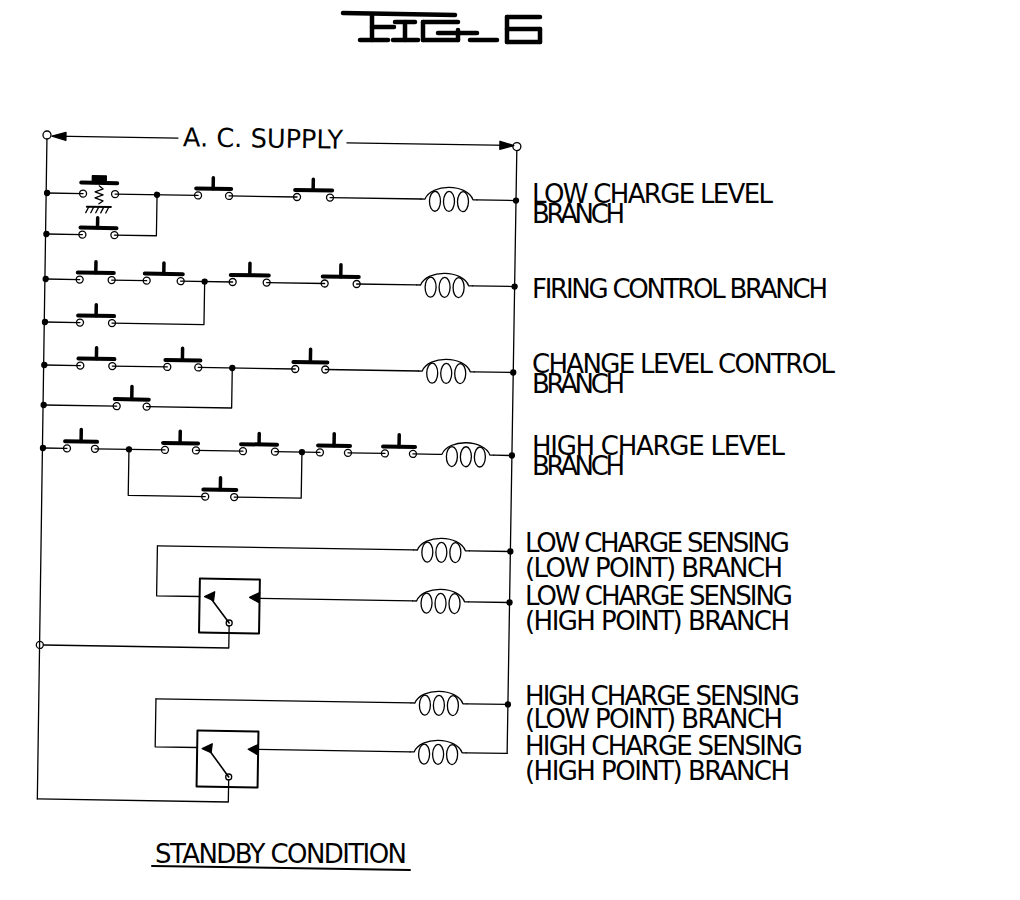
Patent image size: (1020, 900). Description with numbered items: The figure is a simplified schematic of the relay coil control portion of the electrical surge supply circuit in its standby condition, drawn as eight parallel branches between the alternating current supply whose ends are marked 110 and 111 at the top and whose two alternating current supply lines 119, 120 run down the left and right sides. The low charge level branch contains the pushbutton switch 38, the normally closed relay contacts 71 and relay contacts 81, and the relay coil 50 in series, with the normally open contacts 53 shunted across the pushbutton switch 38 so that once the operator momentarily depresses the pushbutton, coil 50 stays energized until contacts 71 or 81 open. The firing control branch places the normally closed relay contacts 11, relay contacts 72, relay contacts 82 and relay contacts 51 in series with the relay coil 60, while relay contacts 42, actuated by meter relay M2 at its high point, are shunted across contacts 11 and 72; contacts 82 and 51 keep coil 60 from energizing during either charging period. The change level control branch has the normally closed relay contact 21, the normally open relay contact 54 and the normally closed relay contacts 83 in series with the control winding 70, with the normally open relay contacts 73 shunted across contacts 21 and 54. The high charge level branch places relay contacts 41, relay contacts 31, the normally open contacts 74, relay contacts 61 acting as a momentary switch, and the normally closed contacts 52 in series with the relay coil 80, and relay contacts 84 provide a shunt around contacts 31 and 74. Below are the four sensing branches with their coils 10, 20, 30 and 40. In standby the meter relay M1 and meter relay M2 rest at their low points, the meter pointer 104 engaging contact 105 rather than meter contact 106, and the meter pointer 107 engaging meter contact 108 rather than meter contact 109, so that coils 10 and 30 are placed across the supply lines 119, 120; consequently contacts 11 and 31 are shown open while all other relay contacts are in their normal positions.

The first AC supply line 110 is at (51, 130).
The second AC supply line 111 is at (514, 140).
The alternating current supply line 120 is at (516, 482).
The alternating current supply line 119 is at (48, 548).
The pushbutton switch 38 is at (98, 176).
The relay contacts 53 is at (108, 223).
The relay contacts 71 is at (218, 186).
The relay contacts 81 is at (318, 187).
The relay coil 50 is at (452, 189).
The relay contacts 11 is at (104, 267).
The relay contacts 72 is at (170, 267).
The relay contacts 82 is at (258, 268).
The relay contacts 51 is at (350, 272).
The relay coil 60 is at (462, 276).
The relay contacts 42 is at (108, 311).
The relay contact 21 is at (108, 353).
The relay contact 54 is at (198, 353).
The relay contacts 83 is at (322, 356).
The control winding 70 is at (463, 362).
The relay contacts 73 is at (146, 398).
The sensing relay contact 41 is at (91, 440).
The relay contacts 31 is at (190, 440).
The relay contacts 74 is at (270, 440).
The relay contacts 61 is at (345, 442).
The relay contacts 52 is at (402, 443).
The relay coil 80 is at (462, 444).
The relay contacts 84 is at (240, 486).
The relay coil 10 is at (442, 540).
The low charge sensing (high point) relay coil 20 is at (442, 592).
The contact 105 is at (217, 590).
The meter contact 106 is at (266, 592).
The meter pointer 104 is at (250, 612).
The relay coil 30 is at (442, 694).
The high charge sensing (high point) relay coil 40 is at (442, 744).
The meter contact 108 is at (217, 742).
The meter contact 109 is at (268, 745).
The meter pointer 107 is at (252, 766).
The meter relay M1 is at (207, 615).
The meter relay M2 is at (207, 770).